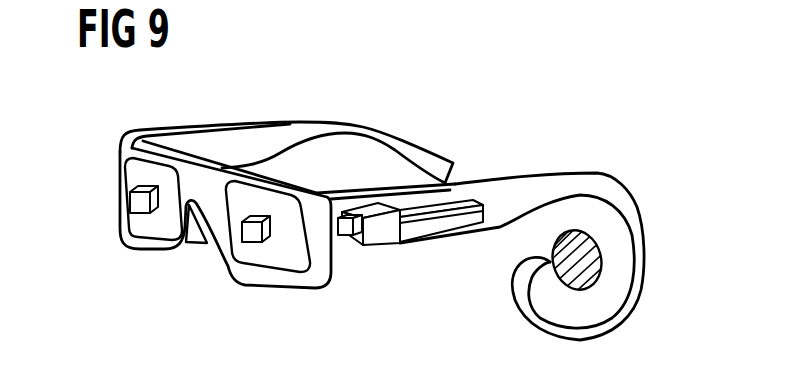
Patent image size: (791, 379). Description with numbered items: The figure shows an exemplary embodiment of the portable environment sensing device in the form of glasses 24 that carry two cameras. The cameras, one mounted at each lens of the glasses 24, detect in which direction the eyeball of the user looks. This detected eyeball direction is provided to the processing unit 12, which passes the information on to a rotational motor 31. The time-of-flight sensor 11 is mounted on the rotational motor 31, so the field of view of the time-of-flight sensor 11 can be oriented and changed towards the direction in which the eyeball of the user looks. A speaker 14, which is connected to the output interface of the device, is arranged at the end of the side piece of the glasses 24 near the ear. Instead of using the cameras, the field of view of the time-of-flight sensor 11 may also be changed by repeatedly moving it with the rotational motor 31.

The time-of-flight sensor 11 is at (343, 233).
The processing unit 12 is at (467, 202).
The speaker 14 is at (576, 230).
The glasses 24 is at (232, 137).
The rotational motor 31 is at (385, 235).